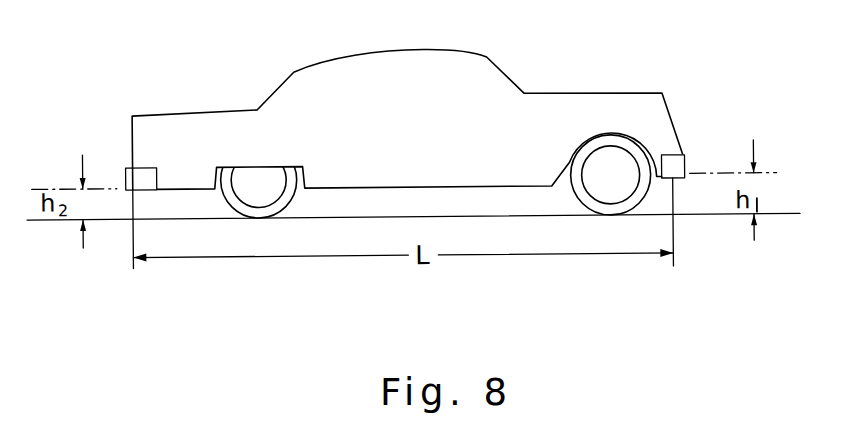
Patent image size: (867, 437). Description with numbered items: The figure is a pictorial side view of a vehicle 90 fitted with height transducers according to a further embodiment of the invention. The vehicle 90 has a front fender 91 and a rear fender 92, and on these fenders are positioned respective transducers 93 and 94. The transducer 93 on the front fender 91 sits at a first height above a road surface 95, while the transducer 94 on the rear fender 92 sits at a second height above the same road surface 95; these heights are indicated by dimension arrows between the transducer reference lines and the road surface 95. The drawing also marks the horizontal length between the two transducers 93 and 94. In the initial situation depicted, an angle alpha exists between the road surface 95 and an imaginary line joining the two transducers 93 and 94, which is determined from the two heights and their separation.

The vehicle 90 is at (565, 116).
The front fender 91 is at (670, 159).
The rear fender 92 is at (150, 175).
The transducer 93 is at (672, 176).
The transducer 94 is at (126, 182).
The road surface 95 is at (685, 219).